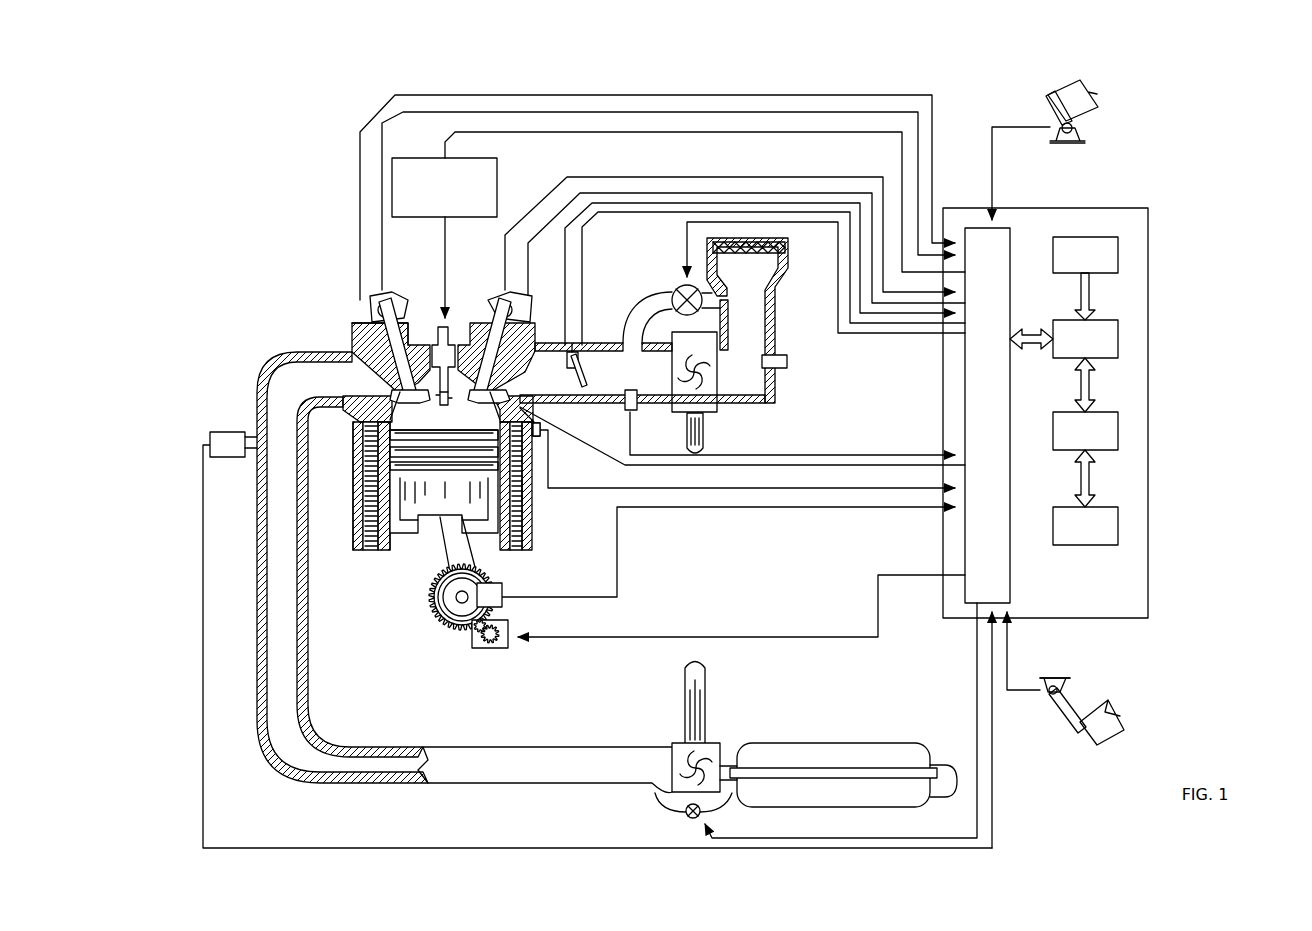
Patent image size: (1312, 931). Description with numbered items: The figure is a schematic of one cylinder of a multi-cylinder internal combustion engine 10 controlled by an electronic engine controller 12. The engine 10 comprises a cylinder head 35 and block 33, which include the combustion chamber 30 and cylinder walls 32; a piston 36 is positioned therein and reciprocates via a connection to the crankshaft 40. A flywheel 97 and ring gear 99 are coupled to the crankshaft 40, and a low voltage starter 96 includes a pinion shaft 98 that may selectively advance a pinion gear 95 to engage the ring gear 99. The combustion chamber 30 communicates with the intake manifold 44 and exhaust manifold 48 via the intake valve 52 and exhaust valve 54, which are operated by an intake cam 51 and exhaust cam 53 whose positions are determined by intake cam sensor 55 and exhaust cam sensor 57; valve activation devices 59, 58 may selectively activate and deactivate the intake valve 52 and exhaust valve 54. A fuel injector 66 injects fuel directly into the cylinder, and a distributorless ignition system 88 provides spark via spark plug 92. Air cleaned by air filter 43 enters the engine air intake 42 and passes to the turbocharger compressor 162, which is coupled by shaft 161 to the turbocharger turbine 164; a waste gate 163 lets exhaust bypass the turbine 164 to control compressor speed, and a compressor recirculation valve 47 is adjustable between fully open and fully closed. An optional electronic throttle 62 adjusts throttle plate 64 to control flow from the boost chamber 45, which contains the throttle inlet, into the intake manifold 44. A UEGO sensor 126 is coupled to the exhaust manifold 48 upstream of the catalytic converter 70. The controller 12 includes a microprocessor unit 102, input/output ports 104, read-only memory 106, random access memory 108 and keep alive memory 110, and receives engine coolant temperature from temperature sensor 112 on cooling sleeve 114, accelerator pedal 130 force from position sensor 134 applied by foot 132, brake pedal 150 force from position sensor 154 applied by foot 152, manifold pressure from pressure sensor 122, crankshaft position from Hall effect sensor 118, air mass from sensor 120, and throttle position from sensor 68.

The internal combustion engine 10 is at (290, 282).
The electronic engine controller 12 is at (1148, 210).
The combustion chamber 30 is at (440, 414).
The cylinder walls 32 is at (393, 552).
The block 33 is at (348, 460).
The cylinder head 35 is at (345, 324).
The piston 36 is at (428, 507).
The crankshaft 40 is at (452, 620).
The engine air intake 42 is at (628, 262).
The air filter 43 is at (760, 256).
The intake manifold 44 is at (538, 390).
The boost chamber 45 is at (628, 390).
The compressor recirculation valve 47 is at (675, 294).
The exhaust manifold 48 is at (312, 392).
The intake cam 51 is at (500, 300).
The intake valve 52 is at (488, 384).
The exhaust cam 53 is at (392, 300).
The exhaust valve 54 is at (356, 362).
The intake cam sensor 55 is at (522, 316).
The exhaust cam sensor 57 is at (372, 306).
The valve activation device 58 is at (400, 312).
The valve activation device 59 is at (495, 324).
The electronic throttle 62 is at (584, 368).
The throttle plate 64 is at (587, 382).
The fuel injector 66 is at (538, 428).
The throttle position sensor 68 is at (571, 352).
The catalytic converter 70 is at (780, 744).
The distributorless ignition system 88 is at (403, 158).
The spark plug 92 is at (448, 324).
The pinion gear 95 is at (498, 650).
The starter 96 is at (506, 646).
The flywheel 97 is at (440, 600).
The pinion shaft 98 is at (482, 646).
The ring gear 99 is at (452, 634).
The microprocessor unit 102 is at (1118, 341).
The input/output ports 104 is at (1012, 240).
The read-only memory 106 is at (1118, 256).
The random access memory 108 is at (1118, 432).
The keep alive memory 110 is at (1118, 527).
The temperature sensor 112 is at (540, 440).
The cooling sleeve 114 is at (517, 506).
The Hall effect sensor 118 is at (505, 587).
The air mass sensor 120 is at (788, 357).
The pressure sensor 122 is at (626, 406).
The Universal Exhaust Gas Oxygen sensor 126 is at (210, 436).
The accelerator pedal 130 is at (1048, 106).
The foot 132 is at (1098, 97).
The position sensor 134 is at (1085, 139).
The brake pedal 150 is at (1068, 732).
The foot 152 is at (1104, 700).
The position sensor 154 is at (1045, 680).
The shaft 161 is at (686, 434).
The turbocharger compressor 162 is at (712, 406).
The waste gate 163 is at (686, 822).
The turbocharger turbine 164 is at (672, 748).